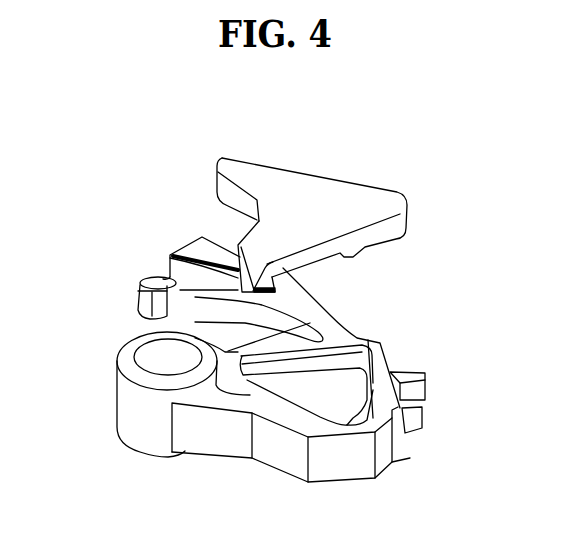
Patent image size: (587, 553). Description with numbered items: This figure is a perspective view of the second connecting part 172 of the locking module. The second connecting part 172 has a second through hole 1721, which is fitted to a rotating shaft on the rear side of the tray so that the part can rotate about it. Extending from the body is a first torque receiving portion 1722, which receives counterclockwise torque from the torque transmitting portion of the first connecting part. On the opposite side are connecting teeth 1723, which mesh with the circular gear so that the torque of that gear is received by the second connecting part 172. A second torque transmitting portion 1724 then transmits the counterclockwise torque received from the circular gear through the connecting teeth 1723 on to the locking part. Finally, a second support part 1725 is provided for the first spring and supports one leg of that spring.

The second connecting part 172 is at (84, 160).
The second through hole 1721 is at (158, 359).
The first torque receiving portion 1722 is at (280, 455).
The connecting teeth 1723 is at (420, 413).
The second torque transmitting portion 1724 is at (137, 284).
The second support part 1725 is at (243, 277).